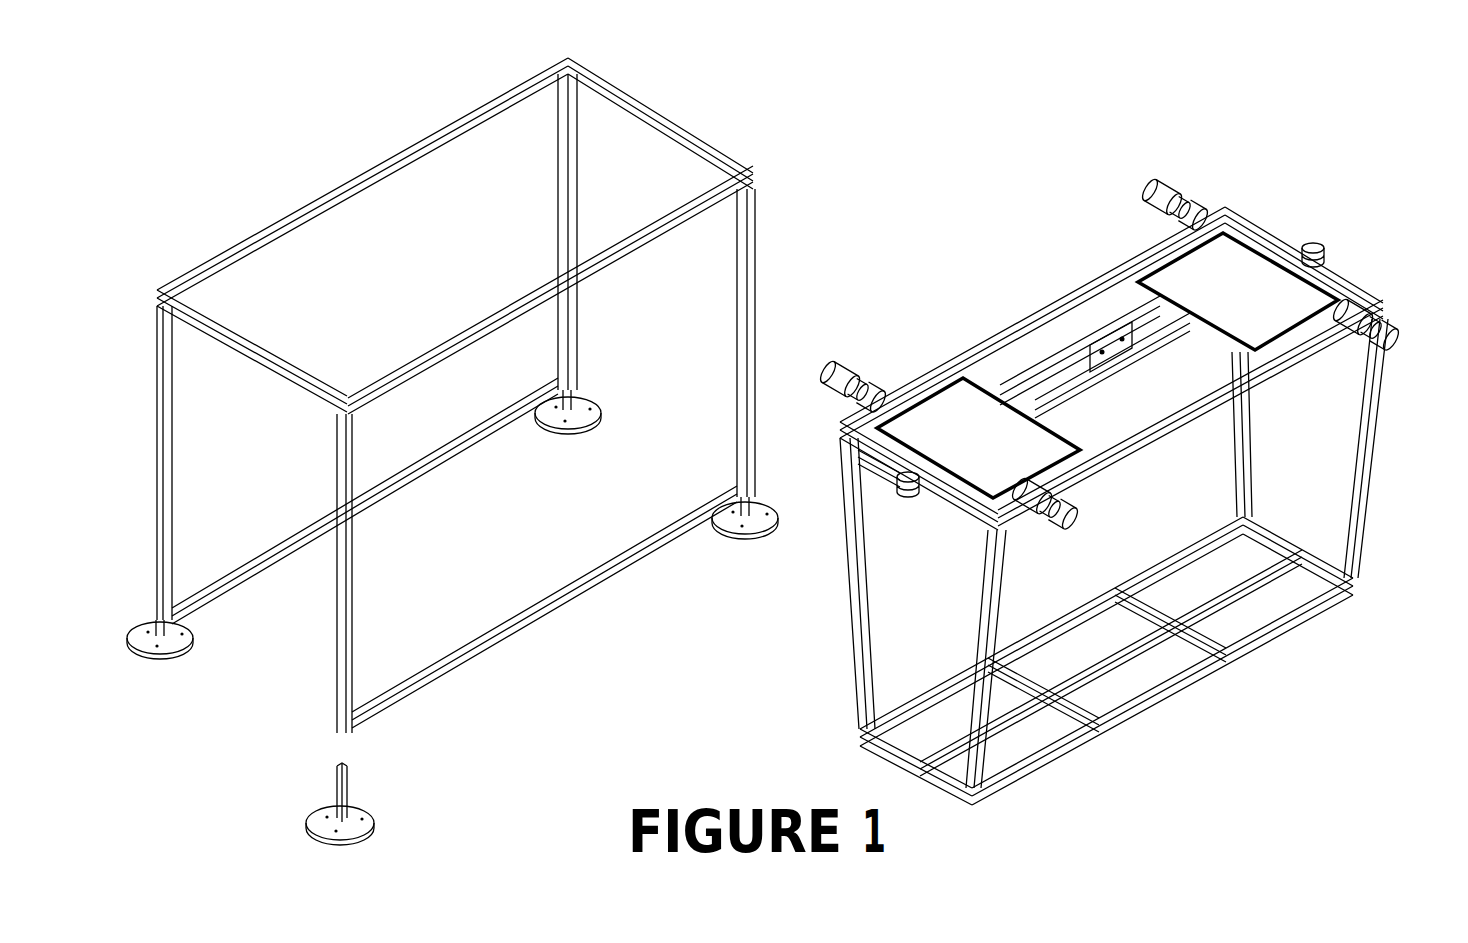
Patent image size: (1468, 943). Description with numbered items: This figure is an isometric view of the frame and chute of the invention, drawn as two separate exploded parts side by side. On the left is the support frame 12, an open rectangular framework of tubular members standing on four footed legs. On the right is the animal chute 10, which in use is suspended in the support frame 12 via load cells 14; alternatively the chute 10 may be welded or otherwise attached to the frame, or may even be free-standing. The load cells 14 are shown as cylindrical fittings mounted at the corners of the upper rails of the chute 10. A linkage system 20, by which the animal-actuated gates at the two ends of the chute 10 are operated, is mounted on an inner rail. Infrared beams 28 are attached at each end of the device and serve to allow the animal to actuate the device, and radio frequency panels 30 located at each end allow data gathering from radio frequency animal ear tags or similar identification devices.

The animal chute 10 is at (1114, 506).
The support frame 12 is at (368, 173).
The load cells 14 is at (833, 350).
The linkage system 20 is at (1103, 337).
The infrared beams 28 is at (898, 497).
The radio frequency panels 30 is at (960, 423).